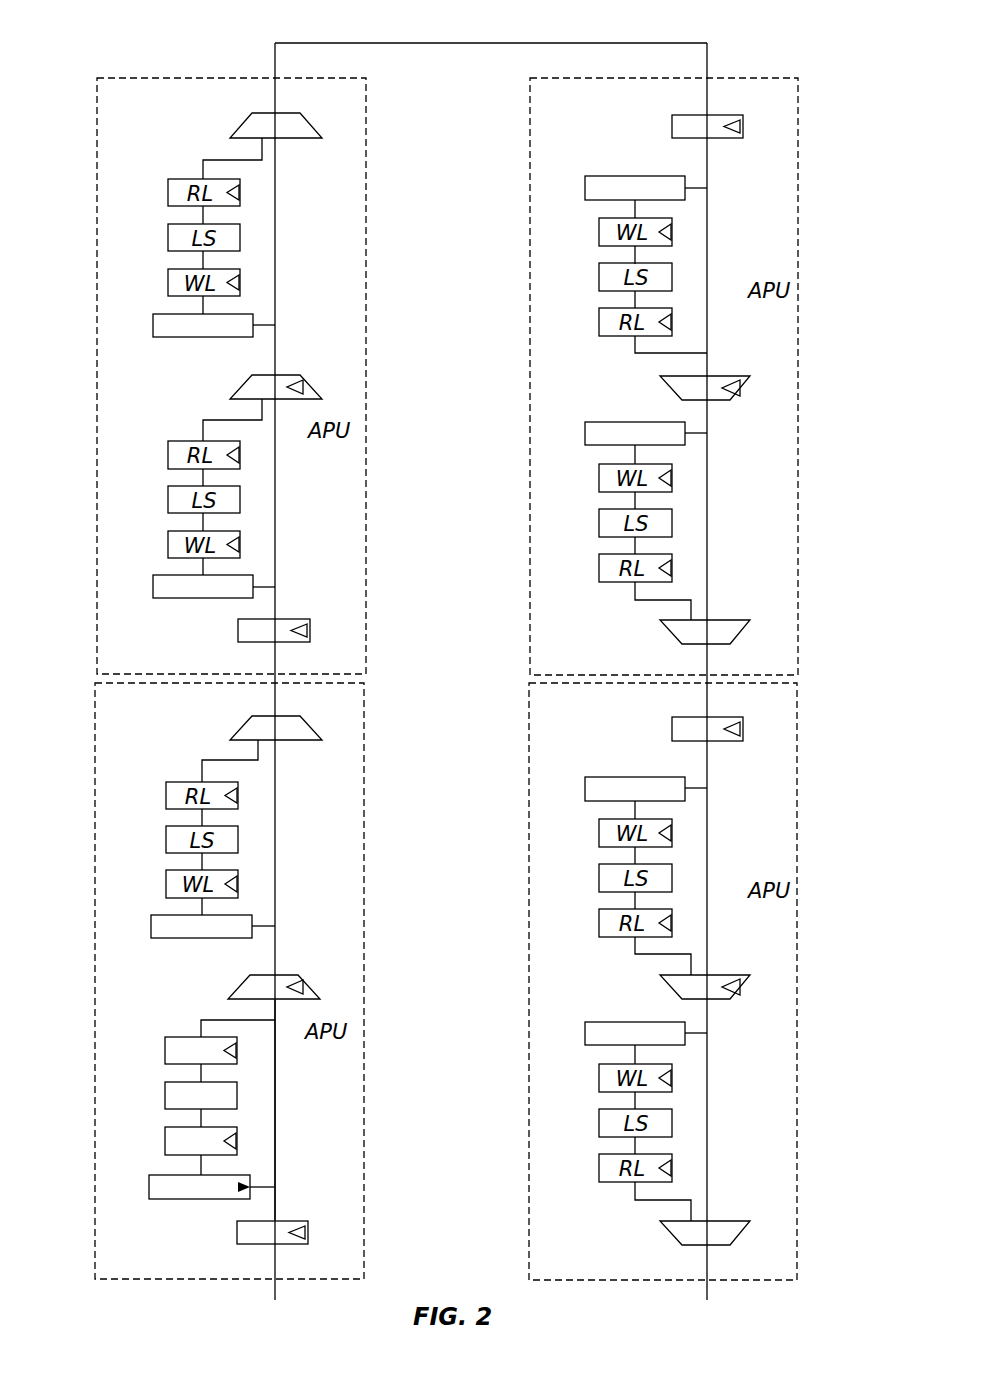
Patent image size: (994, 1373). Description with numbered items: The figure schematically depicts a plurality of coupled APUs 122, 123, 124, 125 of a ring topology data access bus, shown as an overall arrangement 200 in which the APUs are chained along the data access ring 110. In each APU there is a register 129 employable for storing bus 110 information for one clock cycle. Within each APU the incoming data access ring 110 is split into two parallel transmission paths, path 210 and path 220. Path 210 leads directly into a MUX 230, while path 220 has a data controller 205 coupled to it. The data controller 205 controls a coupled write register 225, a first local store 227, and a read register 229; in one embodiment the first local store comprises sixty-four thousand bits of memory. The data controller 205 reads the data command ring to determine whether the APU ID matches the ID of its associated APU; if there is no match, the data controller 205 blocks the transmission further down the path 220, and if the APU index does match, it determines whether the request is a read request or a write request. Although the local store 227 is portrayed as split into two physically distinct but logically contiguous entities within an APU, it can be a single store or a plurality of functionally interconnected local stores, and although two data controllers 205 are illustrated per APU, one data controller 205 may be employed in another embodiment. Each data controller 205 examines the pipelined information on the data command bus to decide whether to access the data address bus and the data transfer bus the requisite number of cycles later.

The memory system 200 is at (745, 41).
The data access ring 110 is at (276, 1288).
The path 210 is at (276, 1117).
The APU 122 is at (112, 1282).
The APU 123 is at (118, 76).
The APU 124 is at (773, 77).
The APU 125 is at (770, 1282).
The register 129 is at (290, 619).
The data controller 205 is at (175, 314).
The path 220 is at (234, 1191).
The write register 225 is at (163, 1138).
The first local store 227 is at (163, 1093).
The read register 229 is at (163, 1048).
The MUX 230 is at (272, 113).